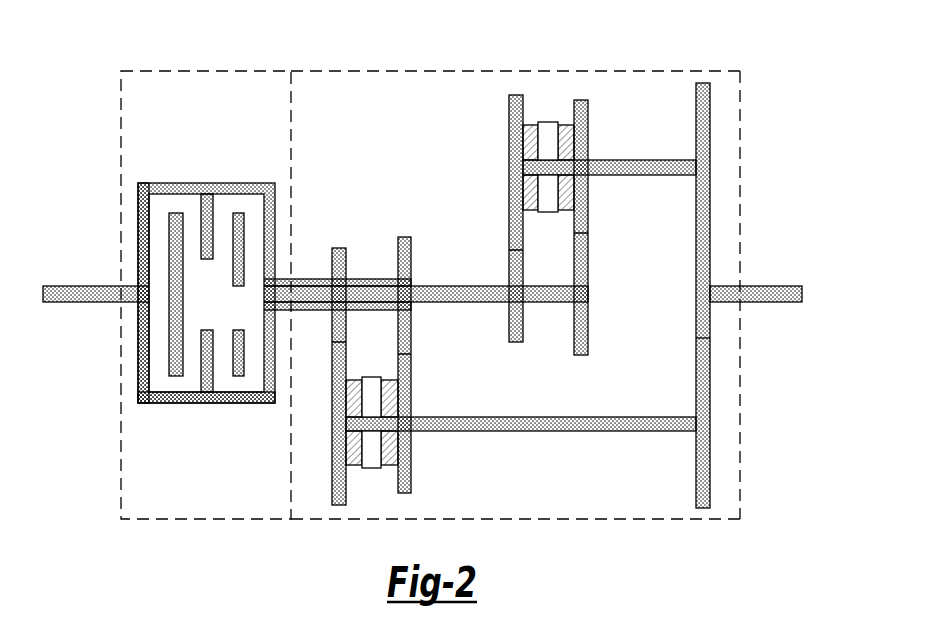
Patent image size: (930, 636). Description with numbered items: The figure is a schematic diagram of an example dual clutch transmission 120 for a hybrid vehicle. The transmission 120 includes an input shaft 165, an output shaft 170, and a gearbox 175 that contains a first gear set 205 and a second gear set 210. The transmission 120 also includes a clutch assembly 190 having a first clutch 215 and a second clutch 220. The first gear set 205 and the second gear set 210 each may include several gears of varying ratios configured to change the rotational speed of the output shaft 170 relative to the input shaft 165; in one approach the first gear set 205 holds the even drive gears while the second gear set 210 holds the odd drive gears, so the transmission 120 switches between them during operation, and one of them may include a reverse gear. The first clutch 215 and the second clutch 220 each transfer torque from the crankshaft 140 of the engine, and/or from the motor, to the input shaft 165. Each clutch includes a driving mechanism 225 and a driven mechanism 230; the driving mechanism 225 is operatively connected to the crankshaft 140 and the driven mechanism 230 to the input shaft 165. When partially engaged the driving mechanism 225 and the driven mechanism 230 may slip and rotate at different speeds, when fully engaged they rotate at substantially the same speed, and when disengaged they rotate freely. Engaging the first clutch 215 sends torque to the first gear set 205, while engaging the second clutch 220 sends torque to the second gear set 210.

The dual clutch transmission 120 is at (668, 538).
The crankshaft 140 is at (77, 286).
The input shaft 165 is at (313, 277).
The output shaft 170 is at (772, 286).
The gearbox 175 is at (740, 96).
The clutch assembly 190 is at (121, 133).
The first gear set 205 is at (480, 150).
The second gear set 210 is at (490, 444).
The first clutch 215 is at (166, 181).
The second clutch 220 is at (247, 405).
The driving mechanism 225 is at (138, 383).
The driven mechanism 230 is at (238, 213).